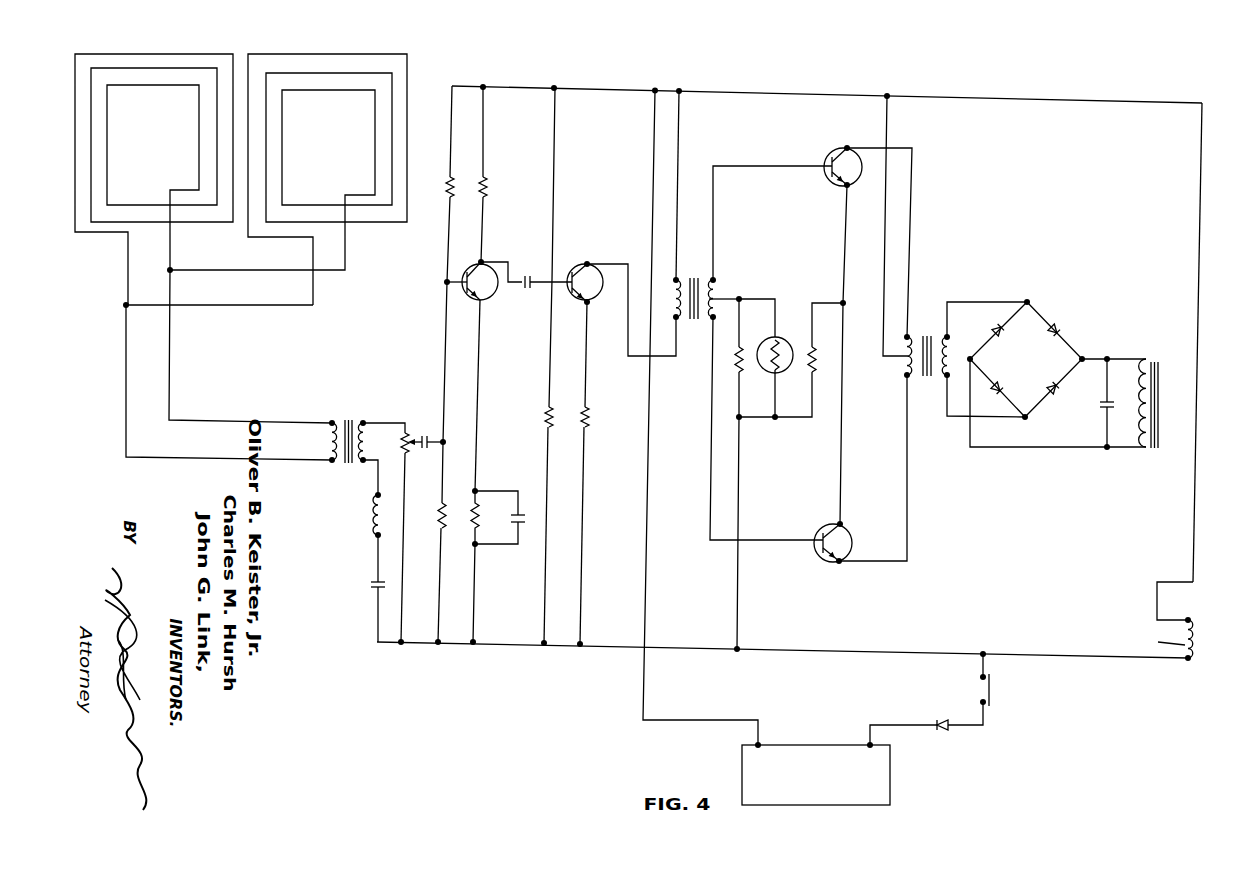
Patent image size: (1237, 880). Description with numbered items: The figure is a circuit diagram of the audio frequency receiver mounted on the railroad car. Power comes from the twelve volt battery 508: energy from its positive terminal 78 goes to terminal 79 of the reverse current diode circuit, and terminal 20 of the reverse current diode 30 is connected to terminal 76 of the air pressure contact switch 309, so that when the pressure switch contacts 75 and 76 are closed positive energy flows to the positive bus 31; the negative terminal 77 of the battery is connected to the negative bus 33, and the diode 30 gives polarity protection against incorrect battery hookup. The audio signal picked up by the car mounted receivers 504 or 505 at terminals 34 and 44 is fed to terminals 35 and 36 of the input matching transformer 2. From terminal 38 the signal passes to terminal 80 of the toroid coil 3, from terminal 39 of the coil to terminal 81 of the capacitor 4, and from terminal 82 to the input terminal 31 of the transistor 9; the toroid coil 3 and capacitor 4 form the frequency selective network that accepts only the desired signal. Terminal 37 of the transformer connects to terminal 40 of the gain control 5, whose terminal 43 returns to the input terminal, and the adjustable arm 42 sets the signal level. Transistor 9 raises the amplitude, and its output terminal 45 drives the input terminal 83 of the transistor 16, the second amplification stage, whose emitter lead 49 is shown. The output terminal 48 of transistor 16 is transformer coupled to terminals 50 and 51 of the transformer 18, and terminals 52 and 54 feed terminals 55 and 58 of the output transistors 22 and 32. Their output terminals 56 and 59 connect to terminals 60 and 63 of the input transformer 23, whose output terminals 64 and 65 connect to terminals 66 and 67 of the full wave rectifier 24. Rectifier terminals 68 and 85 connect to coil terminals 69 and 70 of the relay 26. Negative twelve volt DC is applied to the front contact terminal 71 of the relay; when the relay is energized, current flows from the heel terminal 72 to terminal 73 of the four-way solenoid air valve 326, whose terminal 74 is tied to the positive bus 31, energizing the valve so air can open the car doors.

The car mounted receiver 504 is at (149, 147).
The car mounted receiver 505 is at (325, 147).
The receiver terminal 34 is at (126, 268).
The receiver terminal 44 is at (170, 272).
The input matching transformer 2 is at (352, 416).
The matching transformer terminal 35 is at (331, 421).
The matching transformer terminal 36 is at (331, 462).
The matching transformer terminal 37 is at (364, 421).
The matching transformer terminal 38 is at (363, 462).
The gain control terminal 40 is at (409, 428).
The gain control terminal 43 is at (403, 498).
The gain control 5 is at (408, 452).
The adjustable arm 42 is at (414, 438).
The toroid coil terminal 80 is at (378, 482).
The toroid coil 3 is at (373, 512).
The toroid coil terminal 39 is at (378, 553).
The capacitor terminal 81 is at (375, 568).
The capacitor 4 is at (372, 584).
The capacitor terminal 82 is at (375, 617).
The positive bus 31 is at (386, 643).
The negative bus 33 is at (465, 86).
The transistor 9 is at (491, 289).
The output terminal 45 is at (483, 261).
The input terminal 83 is at (566, 280).
The transistor 16 is at (597, 291).
The emitter lead 49 is at (585, 328).
The output terminal 48 is at (604, 264).
The transformer terminal 50 is at (661, 358).
The transformer 18 is at (690, 325).
The transformer terminal 51 is at (678, 277).
The transformer terminal 52 is at (716, 277).
The transformer terminal 54 is at (714, 320).
The transistor terminal 55 is at (757, 166).
The output transistor 22 is at (835, 152).
The output terminal 56 is at (849, 147).
The transformer terminal 60 is at (911, 278).
The transistor terminal 58 is at (789, 540).
The output transistor 32 is at (822, 557).
The output terminal 59 is at (862, 563).
The transformer terminal 63 is at (907, 429).
The input transformer 23 is at (923, 328).
The output terminal 64 is at (960, 302).
The output terminal 65 is at (947, 398).
The full wave rectifier 24 is at (1048, 311).
The rectifier terminal 66 is at (1026, 300).
The rectifier terminal 85 is at (973, 359).
The rectifier terminal 67 is at (1027, 419).
The rectifier terminal 68 is at (1083, 357).
The coil terminal 69 is at (1115, 358).
The coil terminal 70 is at (1127, 450).
The relay 26 is at (1161, 385).
The front contact terminal 71 is at (1196, 470).
The heel terminal 72 is at (1157, 603).
The solenoid valve terminal 73 is at (1191, 618).
The four-way solenoid air valve 326 is at (1196, 640).
The solenoid valve terminal 74 is at (1188, 661).
The pressure switch contact 75 is at (981, 676).
The air pressure contact switch 309 is at (991, 700).
The pressure switch contact 76 is at (981, 702).
The diode terminal 20 is at (958, 727).
The reverse current diode 30 is at (936, 720).
The diode circuit terminal 79 is at (906, 727).
The positive terminal 78 is at (868, 743).
The negative terminal 77 is at (763, 743).
The 12 volt battery 508 is at (890, 780).